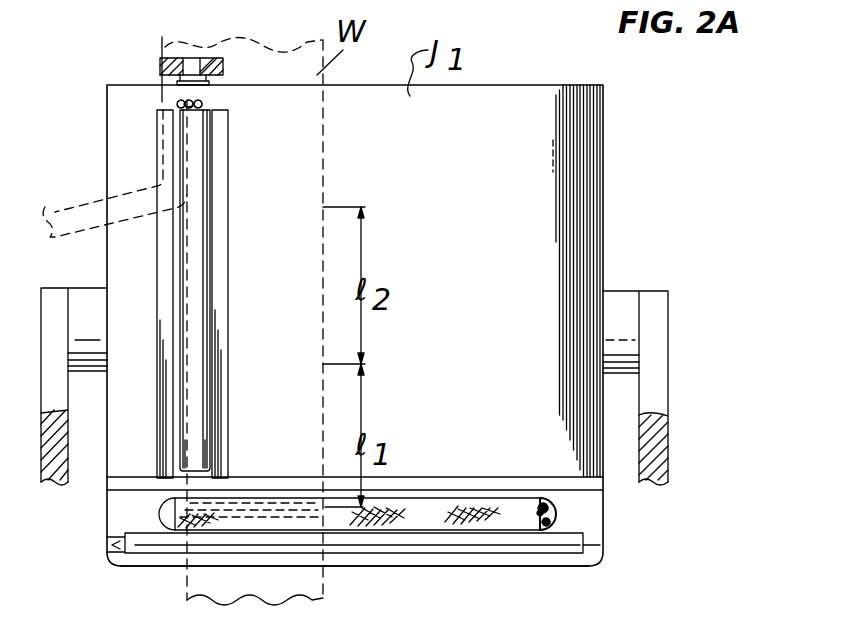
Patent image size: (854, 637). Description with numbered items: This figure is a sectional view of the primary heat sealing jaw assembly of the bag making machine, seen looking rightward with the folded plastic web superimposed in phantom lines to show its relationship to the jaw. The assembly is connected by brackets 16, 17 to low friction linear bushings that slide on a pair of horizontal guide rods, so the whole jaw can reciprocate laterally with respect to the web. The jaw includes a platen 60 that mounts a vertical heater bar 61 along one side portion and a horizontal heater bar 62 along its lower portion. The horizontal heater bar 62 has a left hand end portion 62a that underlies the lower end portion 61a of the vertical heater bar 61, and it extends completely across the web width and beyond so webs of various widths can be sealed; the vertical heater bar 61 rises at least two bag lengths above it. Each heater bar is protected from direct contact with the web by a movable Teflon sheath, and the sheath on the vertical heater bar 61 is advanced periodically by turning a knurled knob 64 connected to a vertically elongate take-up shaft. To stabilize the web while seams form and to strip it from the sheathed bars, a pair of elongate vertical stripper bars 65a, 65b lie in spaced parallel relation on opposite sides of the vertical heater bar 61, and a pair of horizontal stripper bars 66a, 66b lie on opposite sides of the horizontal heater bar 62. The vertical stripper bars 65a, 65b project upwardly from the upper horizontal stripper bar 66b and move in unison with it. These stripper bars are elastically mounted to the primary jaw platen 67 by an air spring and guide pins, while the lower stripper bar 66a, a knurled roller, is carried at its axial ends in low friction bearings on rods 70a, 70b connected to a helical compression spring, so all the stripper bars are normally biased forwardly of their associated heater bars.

The bracket 16 is at (662, 357).
The bracket 17 is at (75, 263).
The platen 60 is at (556, 66).
The vertical heater bar 61 is at (200, 245).
The lower end portion of the vertical heater bar 61a is at (195, 455).
The horizontal heater bar 62 is at (415, 510).
The left hand end portion of the horizontal heater bar 62a is at (178, 522).
The knurled knob 64 is at (188, 62).
The vertical stripper bar 65a is at (165, 320).
The vertical stripper bar 65b is at (222, 297).
The lower horizontal stripper bar 66a is at (428, 543).
The upper horizontal stripper bar 66b is at (490, 483).
The primary jaw platen 67 is at (595, 163).
The rod 70a is at (109, 552).
The rod 70b is at (598, 543).